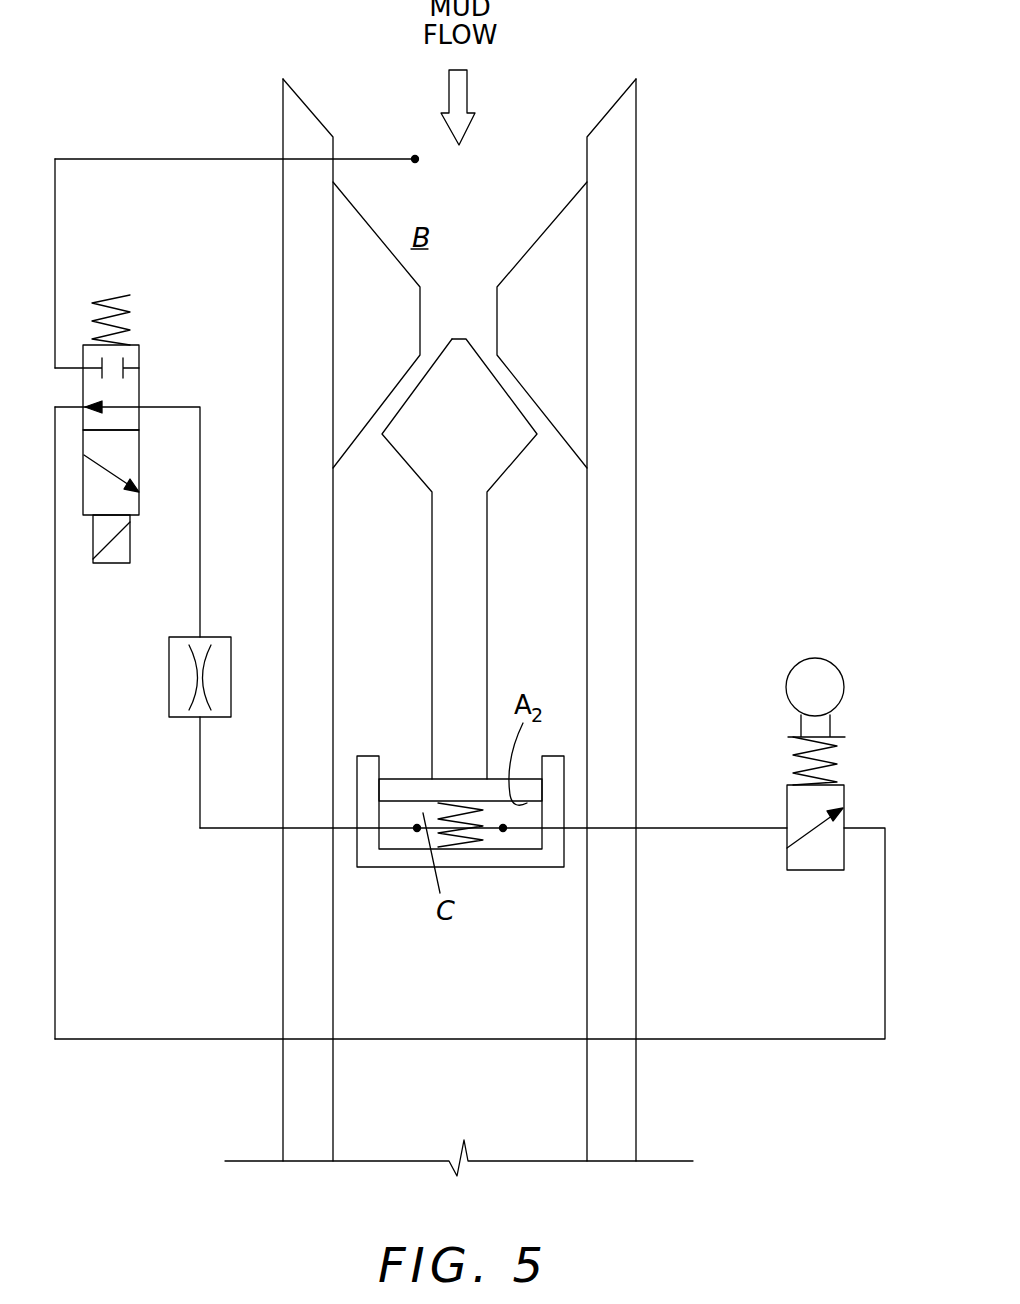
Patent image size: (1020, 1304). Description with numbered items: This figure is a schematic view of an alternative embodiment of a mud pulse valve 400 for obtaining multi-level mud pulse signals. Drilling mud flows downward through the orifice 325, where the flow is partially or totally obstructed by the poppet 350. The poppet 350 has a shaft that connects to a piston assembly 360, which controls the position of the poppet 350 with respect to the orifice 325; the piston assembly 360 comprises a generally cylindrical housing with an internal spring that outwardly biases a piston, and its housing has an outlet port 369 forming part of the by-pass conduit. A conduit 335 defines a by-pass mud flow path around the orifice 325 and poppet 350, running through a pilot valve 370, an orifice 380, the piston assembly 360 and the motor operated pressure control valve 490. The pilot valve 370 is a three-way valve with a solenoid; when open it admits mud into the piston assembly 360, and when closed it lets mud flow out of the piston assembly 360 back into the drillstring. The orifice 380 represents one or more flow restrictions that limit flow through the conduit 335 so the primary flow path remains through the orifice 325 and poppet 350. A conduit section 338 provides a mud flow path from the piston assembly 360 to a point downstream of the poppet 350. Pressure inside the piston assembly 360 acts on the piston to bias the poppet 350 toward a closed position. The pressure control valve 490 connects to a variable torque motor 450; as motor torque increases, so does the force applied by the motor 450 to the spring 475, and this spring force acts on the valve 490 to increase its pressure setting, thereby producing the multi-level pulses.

The mud pulse valve 400 is at (218, 57).
The orifice 325 is at (554, 223).
The poppet 350 is at (507, 445).
The piston assembly 360 is at (398, 866).
The outlet port 369 is at (564, 828).
The pilot valve 370 is at (140, 354).
The orifice 380 is at (169, 677).
The conduit 335 is at (200, 752).
The conduit section 338 is at (57, 883).
The motor 450 is at (787, 690).
The spring 475 is at (795, 758).
The motor operated pressure control valve 490 is at (787, 795).